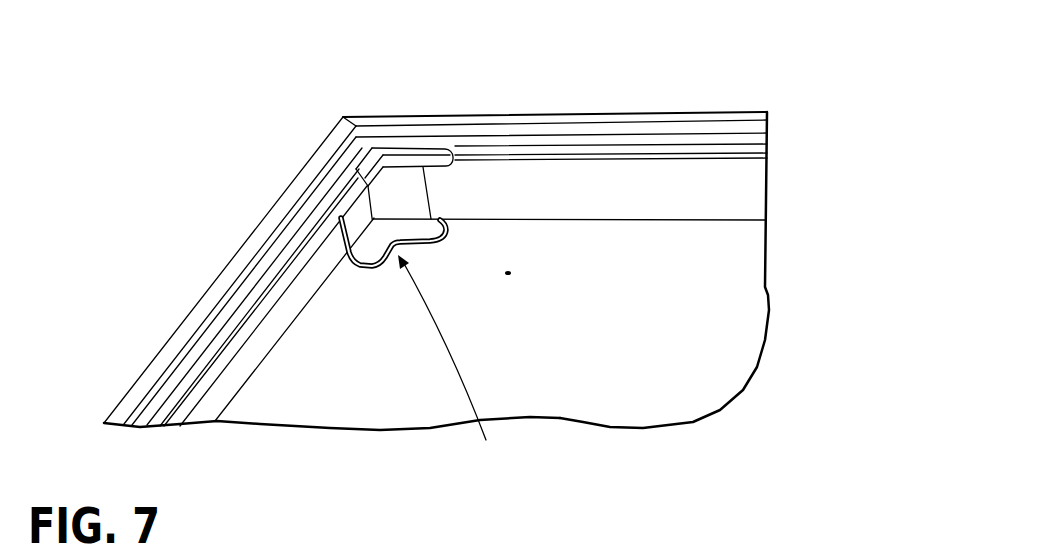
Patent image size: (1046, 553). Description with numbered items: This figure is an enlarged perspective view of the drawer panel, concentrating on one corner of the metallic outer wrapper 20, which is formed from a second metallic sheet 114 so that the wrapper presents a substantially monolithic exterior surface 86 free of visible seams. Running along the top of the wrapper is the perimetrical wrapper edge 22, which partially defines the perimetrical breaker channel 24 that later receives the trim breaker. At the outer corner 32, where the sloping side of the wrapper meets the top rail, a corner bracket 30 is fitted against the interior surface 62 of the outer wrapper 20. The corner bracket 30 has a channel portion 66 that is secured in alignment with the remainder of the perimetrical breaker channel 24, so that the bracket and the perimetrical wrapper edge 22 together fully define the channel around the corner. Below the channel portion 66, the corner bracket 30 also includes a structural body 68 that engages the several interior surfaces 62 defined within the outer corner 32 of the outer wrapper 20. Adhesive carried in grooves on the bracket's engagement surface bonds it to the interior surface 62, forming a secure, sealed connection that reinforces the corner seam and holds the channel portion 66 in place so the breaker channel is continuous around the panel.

The metallic outer wrapper 20 is at (177, 322).
The perimetrical wrapper edge 22 is at (745, 160).
The perimetrical breaker channel 24 is at (475, 142).
The corner bracket 30 is at (450, 366).
The outer corner 32 is at (358, 137).
The interior surface 62 is at (570, 188).
The channel portion 66 is at (390, 143).
The structural body 68 is at (353, 225).
The exterior surface 86 is at (680, 113).
The second metallic sheet 114 is at (707, 309).